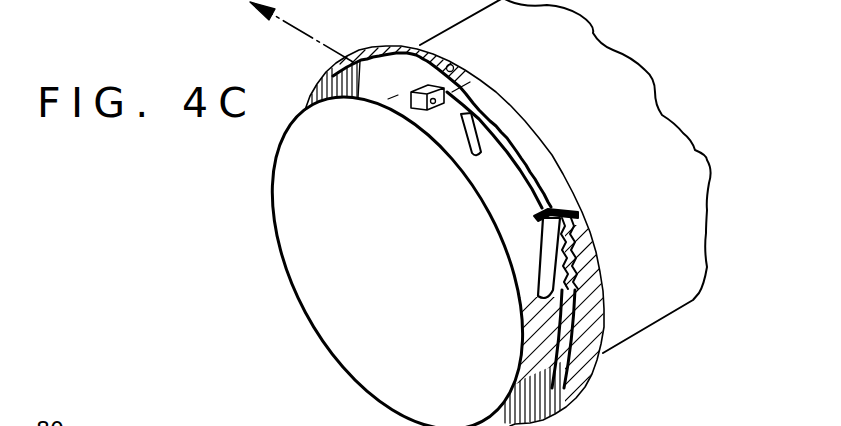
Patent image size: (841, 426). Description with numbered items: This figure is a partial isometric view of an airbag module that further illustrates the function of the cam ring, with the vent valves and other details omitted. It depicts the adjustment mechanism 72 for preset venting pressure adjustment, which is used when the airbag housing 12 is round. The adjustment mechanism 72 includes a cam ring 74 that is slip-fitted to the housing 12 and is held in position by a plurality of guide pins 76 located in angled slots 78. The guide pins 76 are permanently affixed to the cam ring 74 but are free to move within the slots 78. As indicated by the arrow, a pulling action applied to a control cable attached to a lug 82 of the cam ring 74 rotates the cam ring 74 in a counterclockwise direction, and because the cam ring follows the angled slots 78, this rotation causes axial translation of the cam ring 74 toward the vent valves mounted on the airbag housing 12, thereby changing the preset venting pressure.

The airbag housing 12 is at (712, 160).
The adjustment mechanism 72 is at (228, 190).
The cam ring 74 is at (378, 46).
The guide pins 76 is at (453, 64).
The angled slots 78 is at (472, 160).
The lug 82 is at (413, 122).